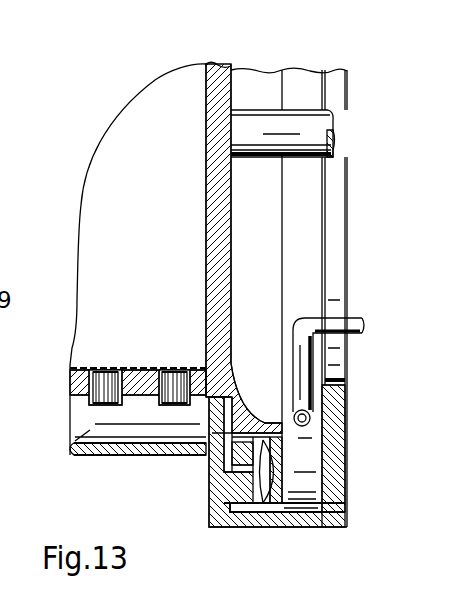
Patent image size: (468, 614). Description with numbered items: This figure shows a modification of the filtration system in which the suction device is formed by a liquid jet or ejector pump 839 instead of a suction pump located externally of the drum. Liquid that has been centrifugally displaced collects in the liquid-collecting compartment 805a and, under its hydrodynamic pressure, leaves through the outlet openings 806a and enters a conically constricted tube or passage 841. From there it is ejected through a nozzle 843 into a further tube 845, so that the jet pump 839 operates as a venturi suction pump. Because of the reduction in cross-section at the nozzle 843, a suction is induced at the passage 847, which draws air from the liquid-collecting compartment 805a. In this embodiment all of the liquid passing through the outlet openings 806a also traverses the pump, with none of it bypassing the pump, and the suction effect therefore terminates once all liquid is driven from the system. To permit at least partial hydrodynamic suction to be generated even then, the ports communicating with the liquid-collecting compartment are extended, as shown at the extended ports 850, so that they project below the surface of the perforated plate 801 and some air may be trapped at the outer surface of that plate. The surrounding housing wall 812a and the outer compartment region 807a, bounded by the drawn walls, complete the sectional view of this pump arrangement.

The perforated plate 801 is at (76, 383).
The extended ports 850 is at (178, 378).
The wall of housing 812a is at (233, 358).
The passage 847 is at (242, 407).
The tube 807a is at (308, 423).
The conically constricted tube 841 is at (266, 452).
The jet pump 839 is at (209, 507).
The further tube 845 is at (260, 496).
The nozzle 843 is at (275, 509).
The liquid-collecting compartment 805a is at (76, 452).
The outlet openings 806a is at (188, 452).